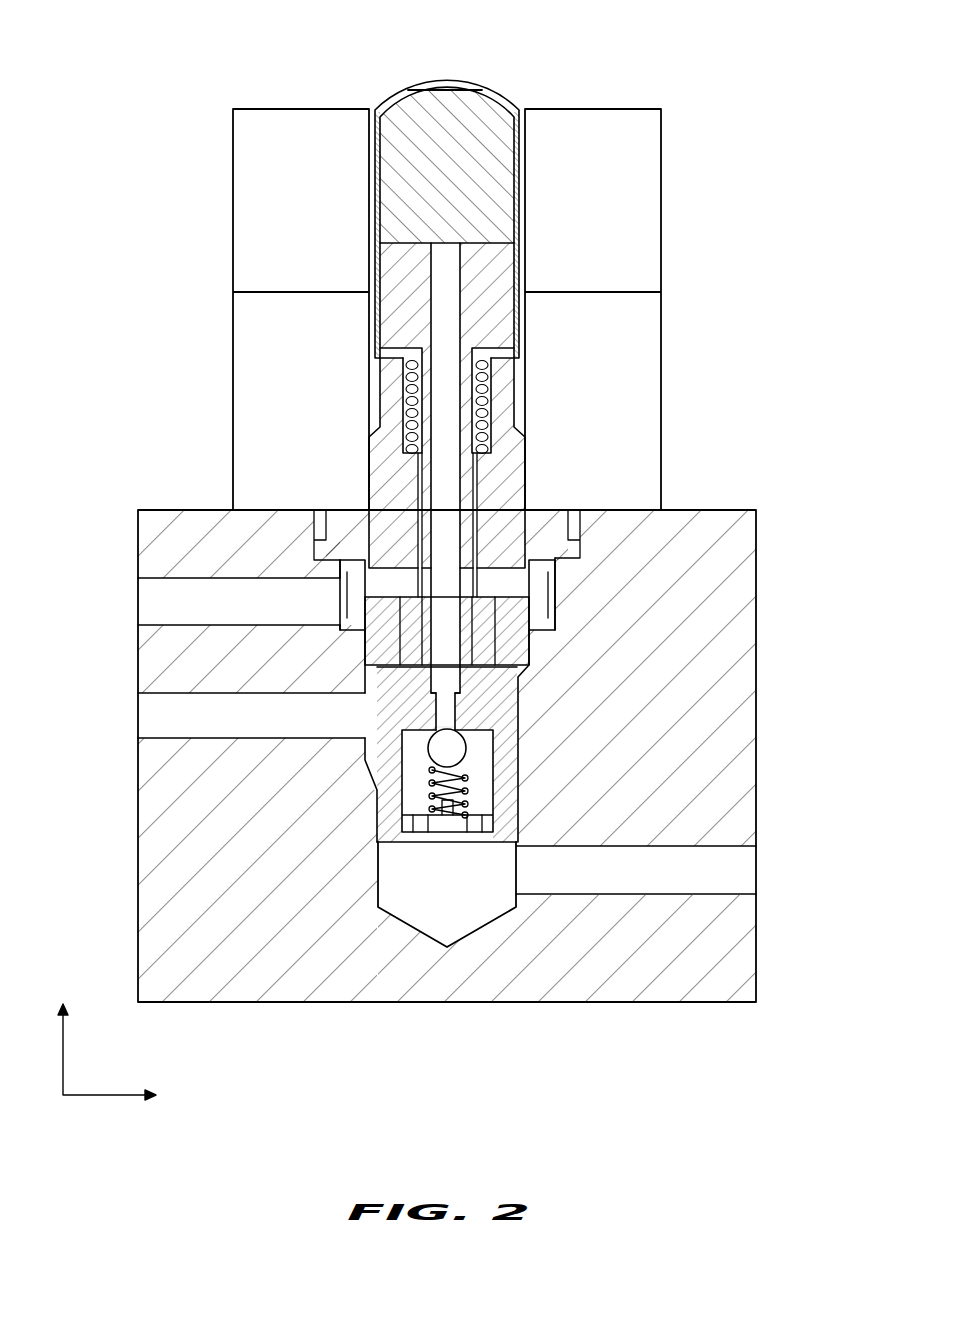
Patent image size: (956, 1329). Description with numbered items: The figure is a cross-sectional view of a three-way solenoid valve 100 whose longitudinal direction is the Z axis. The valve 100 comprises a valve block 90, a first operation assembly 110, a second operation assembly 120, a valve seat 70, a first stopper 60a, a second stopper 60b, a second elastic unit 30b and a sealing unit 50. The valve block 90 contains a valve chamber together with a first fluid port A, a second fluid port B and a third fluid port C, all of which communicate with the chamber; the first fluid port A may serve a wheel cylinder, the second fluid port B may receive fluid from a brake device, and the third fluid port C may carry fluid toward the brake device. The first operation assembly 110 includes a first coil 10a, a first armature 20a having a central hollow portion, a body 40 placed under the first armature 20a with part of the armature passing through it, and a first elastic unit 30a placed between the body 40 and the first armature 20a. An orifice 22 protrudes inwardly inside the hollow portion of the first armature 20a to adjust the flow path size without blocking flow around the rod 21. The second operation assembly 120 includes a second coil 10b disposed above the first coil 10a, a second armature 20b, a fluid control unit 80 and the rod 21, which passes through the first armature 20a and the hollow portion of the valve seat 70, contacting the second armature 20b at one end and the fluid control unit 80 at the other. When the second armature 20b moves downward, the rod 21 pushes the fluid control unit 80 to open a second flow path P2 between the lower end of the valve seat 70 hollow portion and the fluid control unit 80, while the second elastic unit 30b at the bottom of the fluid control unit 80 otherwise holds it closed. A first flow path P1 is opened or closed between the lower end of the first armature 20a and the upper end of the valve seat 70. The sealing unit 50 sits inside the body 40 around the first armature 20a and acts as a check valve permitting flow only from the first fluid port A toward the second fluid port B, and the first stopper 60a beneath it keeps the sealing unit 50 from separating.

The 3-way solenoid valve 100 is at (118, 30).
The first operation assembly 110 is at (316, 338).
The second operation assembly 120 is at (591, 410).
The first coil 10a is at (243, 445).
The second coil 10b is at (655, 203).
The first armature 20a is at (386, 330).
The second armature 20b is at (505, 173).
The rod 21 is at (450, 272).
The orifice 22 is at (437, 667).
The first elastic unit 30a is at (392, 397).
The second elastic unit 30b is at (427, 803).
The body 40 is at (376, 485).
The sealing unit 50 is at (407, 620).
The first stopper 60a is at (407, 657).
The second stopper 60b is at (430, 832).
The valve seat 70 is at (430, 697).
The fluid control unit 80 is at (460, 750).
The valve block 90 is at (142, 530).
The first fluid port A is at (148, 592).
The second fluid port B is at (147, 707).
The third fluid port C is at (752, 880).
The first flow path P1 is at (408, 723).
The second flow path P2 is at (433, 800).